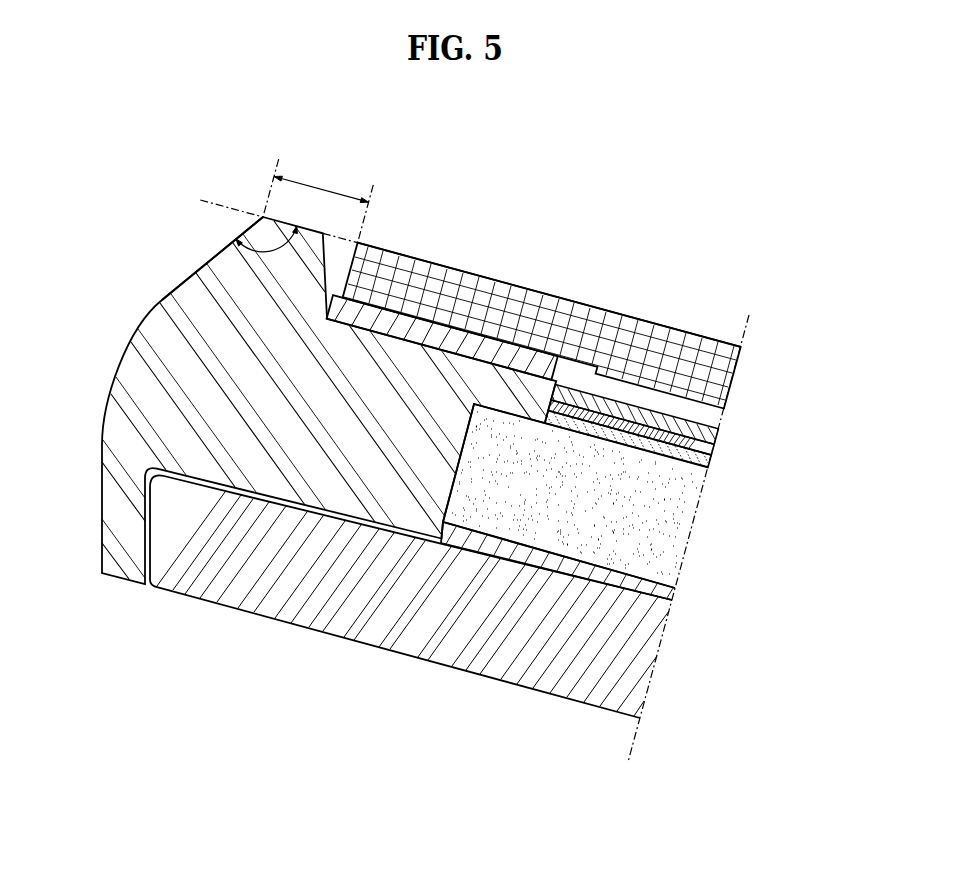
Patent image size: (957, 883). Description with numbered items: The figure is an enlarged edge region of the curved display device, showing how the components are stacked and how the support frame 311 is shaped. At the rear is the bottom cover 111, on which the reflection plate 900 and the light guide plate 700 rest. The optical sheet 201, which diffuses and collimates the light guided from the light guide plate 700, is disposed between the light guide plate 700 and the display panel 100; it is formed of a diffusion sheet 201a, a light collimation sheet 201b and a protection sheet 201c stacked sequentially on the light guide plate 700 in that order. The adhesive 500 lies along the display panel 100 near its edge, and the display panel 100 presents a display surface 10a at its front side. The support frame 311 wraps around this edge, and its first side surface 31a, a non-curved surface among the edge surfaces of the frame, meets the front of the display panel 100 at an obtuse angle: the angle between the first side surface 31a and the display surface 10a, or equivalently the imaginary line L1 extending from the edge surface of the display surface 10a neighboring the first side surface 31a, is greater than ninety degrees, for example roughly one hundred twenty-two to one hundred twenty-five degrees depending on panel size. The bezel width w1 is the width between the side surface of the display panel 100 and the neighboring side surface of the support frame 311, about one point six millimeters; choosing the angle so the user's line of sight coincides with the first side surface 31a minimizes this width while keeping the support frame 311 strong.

The support frame 311 is at (168, 342).
The first side surface 31a is at (226, 246).
The imaginary line L1 is at (203, 200).
The bezel width w1 is at (317, 201).
The display panel 100 is at (569, 318).
The display surface 10a is at (438, 262).
The adhesive 500 is at (484, 345).
The optical sheet 201 is at (714, 442).
The diffusion sheet 201a is at (712, 461).
The light collimation sheet 201b is at (715, 449).
The protection sheet 201c is at (718, 434).
The light guide plate 700 is at (680, 527).
The reflection plate 900 is at (677, 592).
The bottom cover 111 is at (424, 626).